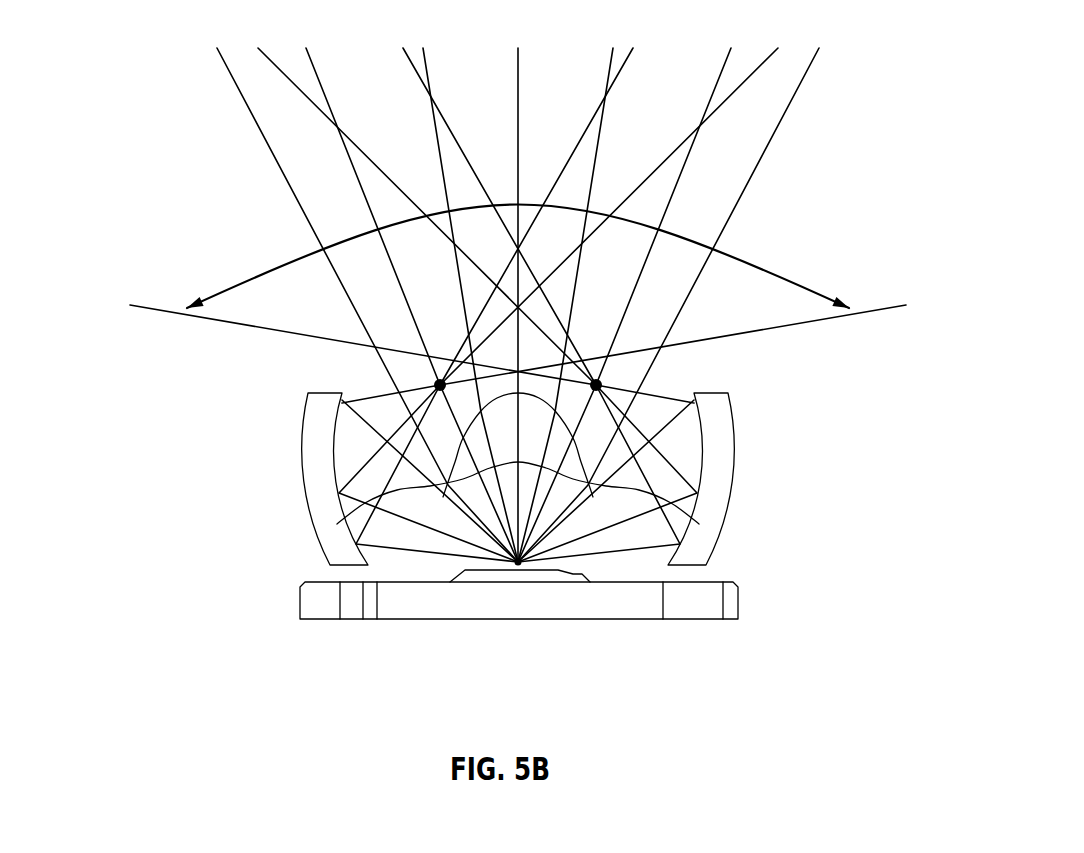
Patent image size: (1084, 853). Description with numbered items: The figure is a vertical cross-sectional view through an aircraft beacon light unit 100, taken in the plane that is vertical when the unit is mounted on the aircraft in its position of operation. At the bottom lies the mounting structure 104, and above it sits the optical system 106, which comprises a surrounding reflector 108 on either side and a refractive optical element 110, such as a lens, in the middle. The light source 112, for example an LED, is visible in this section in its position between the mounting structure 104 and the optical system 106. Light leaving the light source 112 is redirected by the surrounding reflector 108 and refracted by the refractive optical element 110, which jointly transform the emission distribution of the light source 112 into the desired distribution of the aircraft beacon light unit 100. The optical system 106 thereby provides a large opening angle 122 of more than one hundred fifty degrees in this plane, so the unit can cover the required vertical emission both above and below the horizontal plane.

The aircraft beacon light unit 100 is at (181, 457).
The mounting structure 104 is at (603, 620).
The optical system 106 is at (822, 457).
The surrounding reflector 108 is at (306, 412).
The refractive optical element 110 is at (306, 528).
The light source 112 is at (518, 571).
The opening angle 122 is at (298, 256).